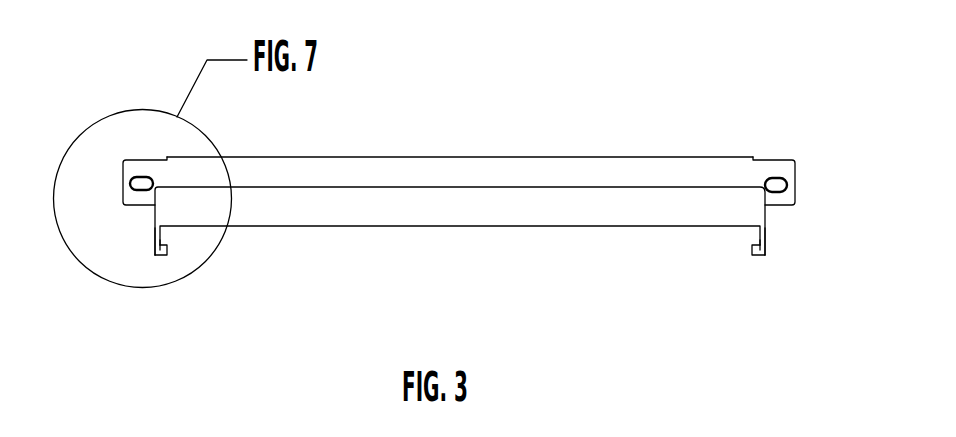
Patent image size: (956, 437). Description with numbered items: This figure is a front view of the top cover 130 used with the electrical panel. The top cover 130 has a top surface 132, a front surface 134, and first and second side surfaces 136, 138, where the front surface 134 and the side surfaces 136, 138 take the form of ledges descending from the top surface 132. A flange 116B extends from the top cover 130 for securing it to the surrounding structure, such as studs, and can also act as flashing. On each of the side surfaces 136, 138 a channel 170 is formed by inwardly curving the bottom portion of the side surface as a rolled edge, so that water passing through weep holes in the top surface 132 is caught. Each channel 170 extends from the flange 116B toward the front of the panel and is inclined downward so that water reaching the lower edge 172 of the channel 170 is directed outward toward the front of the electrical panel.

The top cover 130 is at (783, 126).
The flange 116B is at (427, 157).
The top surface 132 is at (692, 187).
The front surface 134 is at (410, 213).
The first side surface 136 is at (154, 242).
The second side surface 138 is at (767, 228).
The channel 170 is at (177, 242).
The lower edge 172 is at (160, 257).